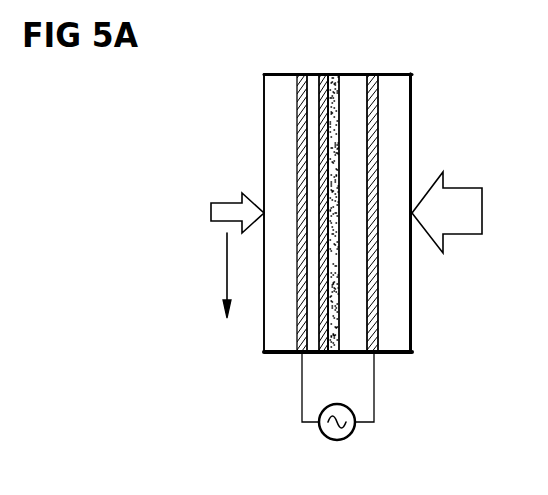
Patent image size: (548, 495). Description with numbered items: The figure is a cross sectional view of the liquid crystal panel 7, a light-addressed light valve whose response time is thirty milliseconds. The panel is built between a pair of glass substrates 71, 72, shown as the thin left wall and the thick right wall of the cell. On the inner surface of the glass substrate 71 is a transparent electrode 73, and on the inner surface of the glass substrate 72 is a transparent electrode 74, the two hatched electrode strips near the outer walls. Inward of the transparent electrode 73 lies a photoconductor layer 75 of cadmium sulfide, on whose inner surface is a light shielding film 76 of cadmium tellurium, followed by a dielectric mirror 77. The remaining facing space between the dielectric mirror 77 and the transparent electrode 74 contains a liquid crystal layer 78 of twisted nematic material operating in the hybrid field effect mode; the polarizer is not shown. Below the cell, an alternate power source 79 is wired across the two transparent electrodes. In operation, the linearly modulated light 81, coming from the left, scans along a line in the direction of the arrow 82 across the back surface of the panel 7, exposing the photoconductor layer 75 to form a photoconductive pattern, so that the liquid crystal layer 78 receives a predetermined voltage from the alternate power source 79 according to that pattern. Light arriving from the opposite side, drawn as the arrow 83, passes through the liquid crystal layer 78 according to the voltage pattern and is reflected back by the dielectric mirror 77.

The liquid crystal panel 7 is at (413, 323).
The glass substrate 71 is at (282, 83).
The glass substrate 72 is at (393, 157).
The transparent electrode 73 is at (302, 80).
The transparent electrode 74 is at (380, 122).
The photoconductor layer 75 is at (309, 151).
The light shielding film 76 is at (322, 112).
The dielectric mirror 77 is at (337, 82).
The liquid crystal layer 78 is at (358, 82).
The alternate power source 79 is at (353, 436).
The linearly modulated light 81 is at (222, 223).
The arrow indicating scanning line direction 82 is at (222, 281).
The incident light from opposite side 83 is at (473, 234).